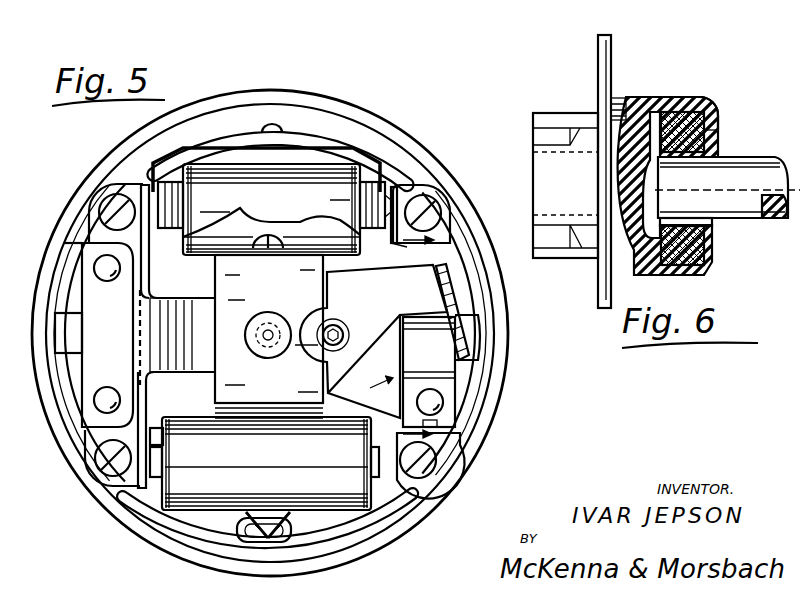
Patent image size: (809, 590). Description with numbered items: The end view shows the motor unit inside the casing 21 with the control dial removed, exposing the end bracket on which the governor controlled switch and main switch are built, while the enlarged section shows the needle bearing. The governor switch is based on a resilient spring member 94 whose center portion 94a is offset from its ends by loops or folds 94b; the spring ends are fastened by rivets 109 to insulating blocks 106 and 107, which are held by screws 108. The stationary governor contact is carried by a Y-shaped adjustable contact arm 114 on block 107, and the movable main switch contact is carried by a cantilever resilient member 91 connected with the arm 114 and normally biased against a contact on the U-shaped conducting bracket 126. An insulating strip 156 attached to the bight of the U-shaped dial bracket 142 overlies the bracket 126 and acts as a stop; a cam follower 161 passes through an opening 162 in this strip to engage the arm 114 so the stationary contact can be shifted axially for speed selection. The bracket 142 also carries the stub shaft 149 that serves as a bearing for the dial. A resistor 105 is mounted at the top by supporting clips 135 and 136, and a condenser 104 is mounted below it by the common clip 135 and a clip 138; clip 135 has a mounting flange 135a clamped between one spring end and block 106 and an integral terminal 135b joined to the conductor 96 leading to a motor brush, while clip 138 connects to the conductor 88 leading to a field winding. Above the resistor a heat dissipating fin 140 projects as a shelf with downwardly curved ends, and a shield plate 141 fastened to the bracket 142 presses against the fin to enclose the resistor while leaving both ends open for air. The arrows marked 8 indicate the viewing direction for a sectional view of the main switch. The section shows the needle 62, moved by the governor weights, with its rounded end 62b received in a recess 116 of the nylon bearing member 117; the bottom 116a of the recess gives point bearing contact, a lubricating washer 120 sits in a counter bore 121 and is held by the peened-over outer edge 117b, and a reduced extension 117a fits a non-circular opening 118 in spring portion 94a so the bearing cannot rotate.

In FIG. 5, the casing 21 is at (382, 120).
In FIG. 5, the heat dissipator 140 is at (294, 140).
In FIG. 5, the conductor 96 is at (232, 522).
In FIG. 5, the insulating block 106 is at (88, 225).
In FIG. 5, the screws 108 is at (112, 200).
In FIG. 5, the insulating block 107 is at (450, 220).
In FIG. 5, the clip 138 is at (420, 488).
In FIG. 5, the clip 136 is at (424, 190).
In FIG. 5, the section line 8 is at (427, 340).
In FIG. 5, the resistor 105 is at (274, 209).
In FIG. 5, the shield plate 141 is at (271, 228).
In FIG. 5, the bracket member 142 is at (269, 336).
In FIG. 5, the stub shaft 149 is at (258, 354).
In FIG. 5, the capacitor 104 is at (264, 463).
In FIG. 5, the conductor 88 is at (298, 522).
In FIG. 5, the resilient member 94 is at (94, 335).
In FIG. 5, the rivets 109 is at (99, 278).
In FIG. 5, the supporting clip 135 is at (147, 237).
In FIG. 5, the mounting flange 135a is at (143, 289).
In FIG. 5, the loops or folds 94b is at (150, 404).
In FIG. 5, the integral terminal 135b is at (165, 433).
In FIG. 5, the insulating strip 156 is at (373, 341).
In FIG. 5, the opening 162 is at (344, 336).
In FIG. 5, the cam follower 161 is at (336, 328).
In FIG. 5, the resilient member 91 is at (429, 372).
In FIG. 5, the adjustable contact arm 114 is at (470, 364).
In FIG. 5, the conducting bracket 126 is at (468, 328).
In FIG. 6, the center portion 94a is at (612, 50).
In FIG. 6, the extension of reduced cross section 117a is at (550, 113).
In FIG. 6, the opening 118 is at (590, 262).
In FIG. 6, the rounded end 62b is at (640, 115).
In FIG. 6, the counter bore 121 is at (703, 100).
In FIG. 6, the lubricating washer 120 is at (710, 132).
In FIG. 6, the recess 116 is at (712, 157).
In FIG. 6, the bottom of recess 116a is at (760, 190).
In FIG. 6, the needle 62 is at (748, 220).
In FIG. 6, the outer edge 117b is at (712, 258).
In FIG. 6, the bearing member 117 is at (668, 277).